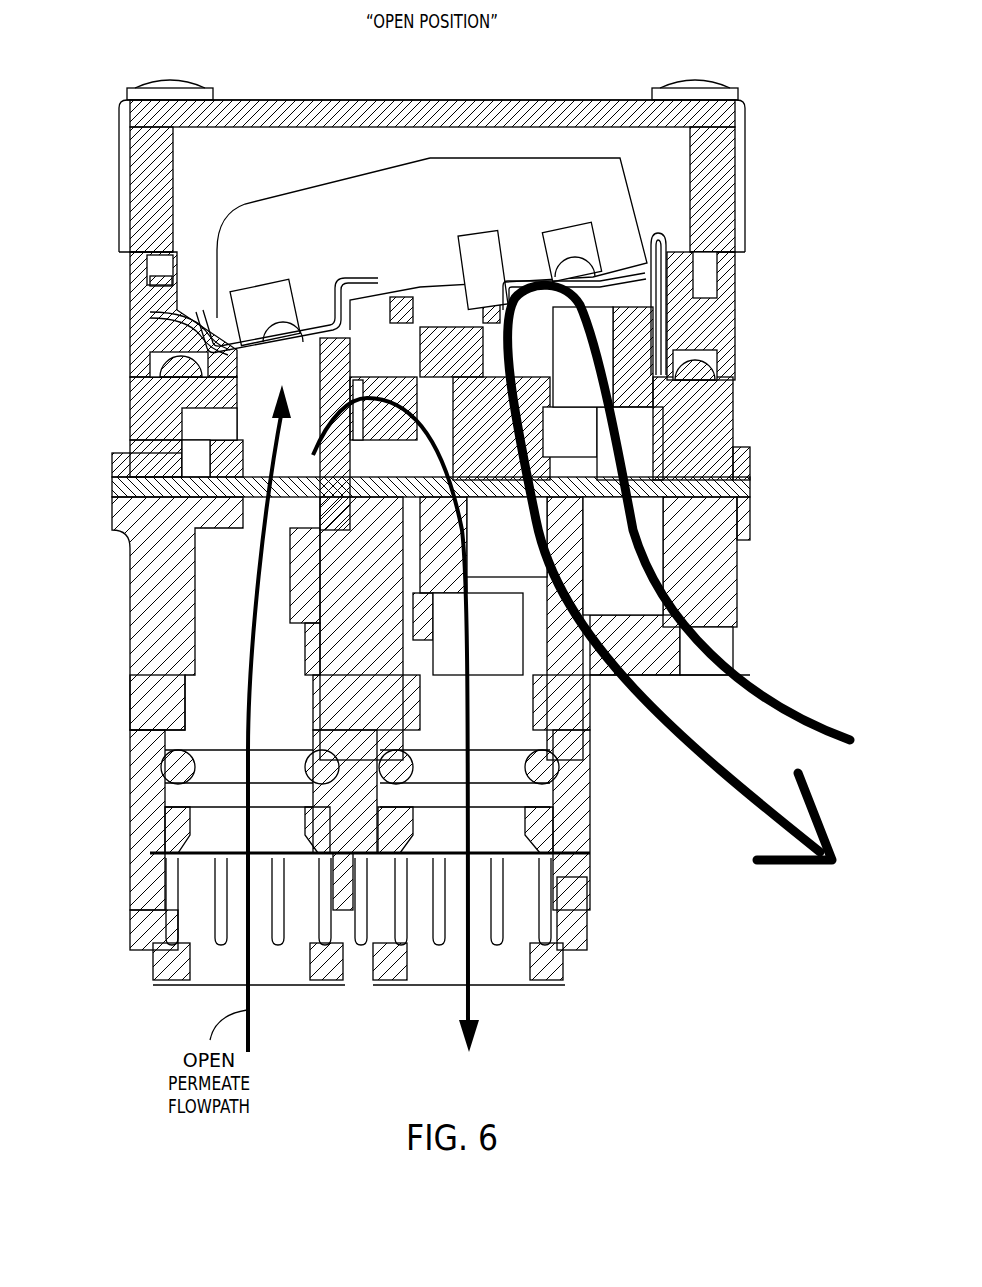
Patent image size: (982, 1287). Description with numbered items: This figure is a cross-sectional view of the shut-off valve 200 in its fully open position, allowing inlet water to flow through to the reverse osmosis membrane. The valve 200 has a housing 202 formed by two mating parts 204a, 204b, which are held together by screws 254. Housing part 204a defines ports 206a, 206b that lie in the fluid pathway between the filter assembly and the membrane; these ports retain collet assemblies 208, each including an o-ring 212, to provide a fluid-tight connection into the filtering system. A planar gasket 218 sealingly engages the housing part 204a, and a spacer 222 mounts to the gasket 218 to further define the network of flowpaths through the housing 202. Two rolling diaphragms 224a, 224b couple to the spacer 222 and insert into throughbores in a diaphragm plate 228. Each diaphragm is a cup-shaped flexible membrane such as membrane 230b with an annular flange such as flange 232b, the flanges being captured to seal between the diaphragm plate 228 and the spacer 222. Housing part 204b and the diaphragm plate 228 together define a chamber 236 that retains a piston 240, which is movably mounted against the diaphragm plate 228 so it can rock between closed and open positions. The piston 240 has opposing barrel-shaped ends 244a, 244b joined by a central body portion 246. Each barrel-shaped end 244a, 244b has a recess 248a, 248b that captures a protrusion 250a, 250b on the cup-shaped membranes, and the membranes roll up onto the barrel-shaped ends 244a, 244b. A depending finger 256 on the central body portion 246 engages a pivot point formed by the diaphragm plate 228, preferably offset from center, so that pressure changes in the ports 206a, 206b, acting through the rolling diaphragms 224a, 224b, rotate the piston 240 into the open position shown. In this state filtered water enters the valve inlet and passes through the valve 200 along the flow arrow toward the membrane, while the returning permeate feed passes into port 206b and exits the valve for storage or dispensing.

The shut-off valve 200 is at (787, 582).
The housing 202 is at (135, 748).
The housing part 204a is at (130, 660).
The housing part 204b is at (730, 285).
The port 206a is at (507, 975).
The port 206b is at (280, 975).
The collet assembly 208 is at (165, 958).
The o-ring 212 is at (160, 768).
The planar gasket 218 is at (745, 492).
The spacer 222 is at (135, 435).
The rolling diaphragm 224a is at (165, 325).
The rolling diaphragm 224b is at (665, 318).
The diaphragm plate 228 is at (135, 300).
The cup-shaped membrane 230b is at (664, 240).
The annular flange 232b is at (700, 365).
The chamber 236 is at (328, 148).
The piston 240 is at (442, 163).
The barrel-shaped end 244a is at (245, 318).
The barrel-shaped end 244b is at (620, 247).
The central body portion 246 is at (412, 178).
The recess 248a is at (276, 295).
The recess 248b is at (567, 235).
The protrusion 250a is at (288, 322).
The protrusion 250b is at (577, 262).
The screws 254 is at (170, 88).
The depending finger 256 is at (455, 287).